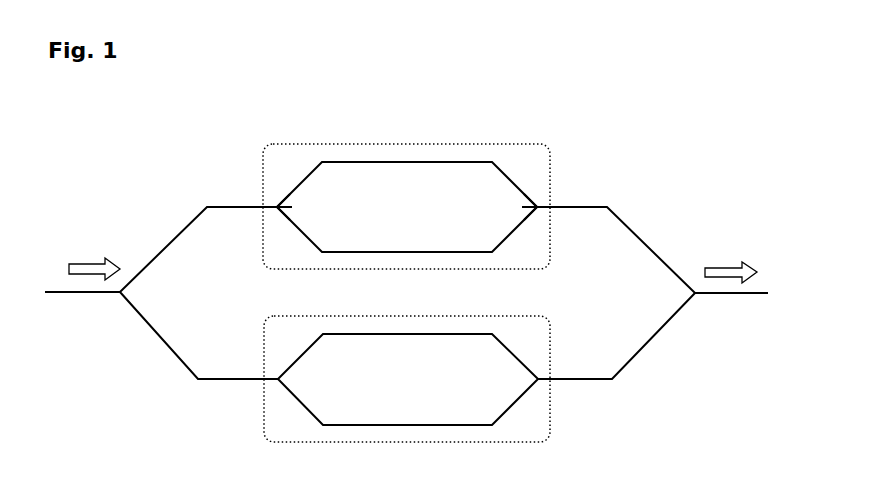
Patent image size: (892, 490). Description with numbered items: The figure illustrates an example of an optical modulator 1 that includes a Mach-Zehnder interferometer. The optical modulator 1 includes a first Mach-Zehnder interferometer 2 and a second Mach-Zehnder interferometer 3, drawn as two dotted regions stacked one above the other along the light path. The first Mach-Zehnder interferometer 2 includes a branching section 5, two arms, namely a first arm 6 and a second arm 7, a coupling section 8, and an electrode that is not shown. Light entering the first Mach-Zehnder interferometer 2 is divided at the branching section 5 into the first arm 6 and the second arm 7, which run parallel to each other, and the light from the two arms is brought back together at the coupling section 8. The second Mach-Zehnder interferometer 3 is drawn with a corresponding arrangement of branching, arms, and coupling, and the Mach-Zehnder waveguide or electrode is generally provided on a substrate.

The optical modulator 1 is at (502, 131).
The first Mach-Zehnder interferometer 2 is at (280, 143).
The second Mach-Zehnder interferometer 3 is at (264, 423).
The branching section 5 is at (275, 210).
The first arm 6 is at (400, 162).
The second arm 7 is at (425, 253).
The coupling section 8 is at (538, 207).